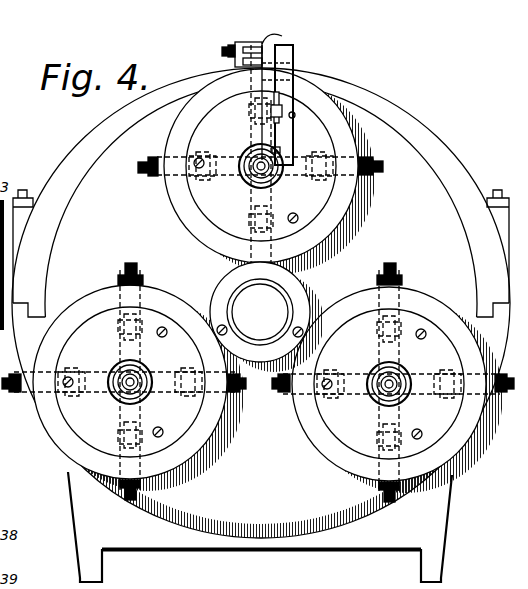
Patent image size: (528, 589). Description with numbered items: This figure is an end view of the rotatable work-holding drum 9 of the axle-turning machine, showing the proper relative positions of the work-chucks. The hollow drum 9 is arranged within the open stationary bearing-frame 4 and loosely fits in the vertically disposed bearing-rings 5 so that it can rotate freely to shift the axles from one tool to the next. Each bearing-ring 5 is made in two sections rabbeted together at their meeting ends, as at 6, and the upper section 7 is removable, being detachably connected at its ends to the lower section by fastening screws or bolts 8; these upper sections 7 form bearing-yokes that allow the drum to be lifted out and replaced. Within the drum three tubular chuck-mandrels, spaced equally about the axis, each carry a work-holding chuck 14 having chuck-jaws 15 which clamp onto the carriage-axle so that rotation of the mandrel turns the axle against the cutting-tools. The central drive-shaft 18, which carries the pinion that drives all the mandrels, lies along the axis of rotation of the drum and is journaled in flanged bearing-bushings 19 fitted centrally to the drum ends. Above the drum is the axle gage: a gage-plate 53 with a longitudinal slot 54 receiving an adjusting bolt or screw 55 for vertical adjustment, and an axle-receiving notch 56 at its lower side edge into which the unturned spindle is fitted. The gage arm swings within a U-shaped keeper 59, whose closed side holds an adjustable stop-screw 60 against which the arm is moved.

The bearing-frame 4 is at (260, 527).
The bearing-rings 5 is at (261, 303).
The rabbeted joint 6 is at (261, 302).
The upper removable section 7 is at (417, 128).
The fastening screws or bolts 8 is at (261, 240).
The rotatable work-holding drum 9 is at (261, 372).
The work-holding chuck 14 is at (268, 281).
The chuck-jaws 15 is at (244, 130).
The central drive-shaft 18 is at (267, 317).
The flanged bearing-bushings 19 is at (232, 292).
The gage-plate 53 is at (287, 90).
The slot 54 is at (281, 98).
The adjusting bolt or screw 55 is at (294, 117).
The axle-receiving notch 56 is at (280, 150).
The U-shaped keeper 59 is at (258, 46).
The adjustable stop-screw 60 is at (221, 49).